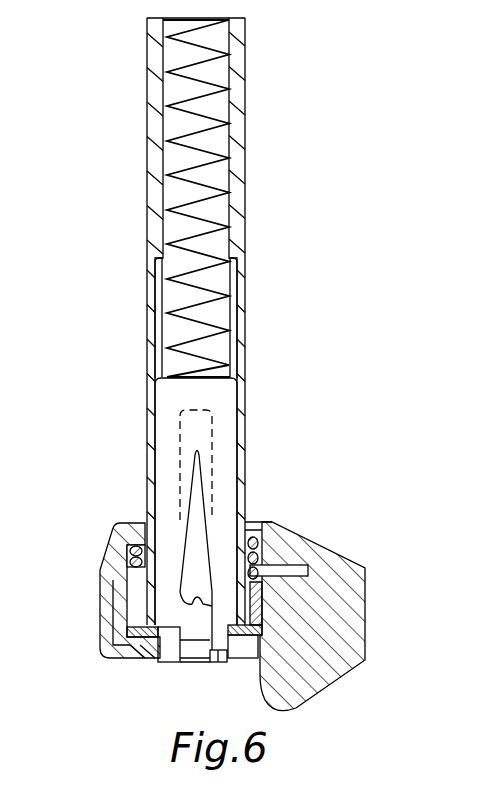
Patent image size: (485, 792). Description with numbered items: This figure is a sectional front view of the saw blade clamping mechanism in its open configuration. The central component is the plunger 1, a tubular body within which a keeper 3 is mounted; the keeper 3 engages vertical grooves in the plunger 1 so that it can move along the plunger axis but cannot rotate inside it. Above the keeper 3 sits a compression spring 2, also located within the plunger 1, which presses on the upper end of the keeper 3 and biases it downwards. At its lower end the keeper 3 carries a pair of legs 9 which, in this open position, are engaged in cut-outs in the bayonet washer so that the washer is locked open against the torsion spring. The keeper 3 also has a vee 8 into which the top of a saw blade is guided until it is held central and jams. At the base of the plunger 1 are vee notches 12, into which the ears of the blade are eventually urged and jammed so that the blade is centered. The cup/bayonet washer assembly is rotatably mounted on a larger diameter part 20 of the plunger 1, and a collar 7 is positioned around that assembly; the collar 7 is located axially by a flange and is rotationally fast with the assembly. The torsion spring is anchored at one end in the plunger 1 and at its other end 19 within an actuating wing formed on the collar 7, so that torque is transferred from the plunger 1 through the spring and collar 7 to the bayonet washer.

The plunger 1 is at (245, 63).
The compression spring 2 is at (217, 117).
The keeper 3 is at (223, 393).
The collar 7 is at (125, 546).
The vee 8 is at (203, 477).
The legs 9 is at (168, 660).
The vee notches 12 is at (190, 608).
The other end of torsion spring 19 is at (296, 563).
The larger diameter part 20 is at (247, 606).